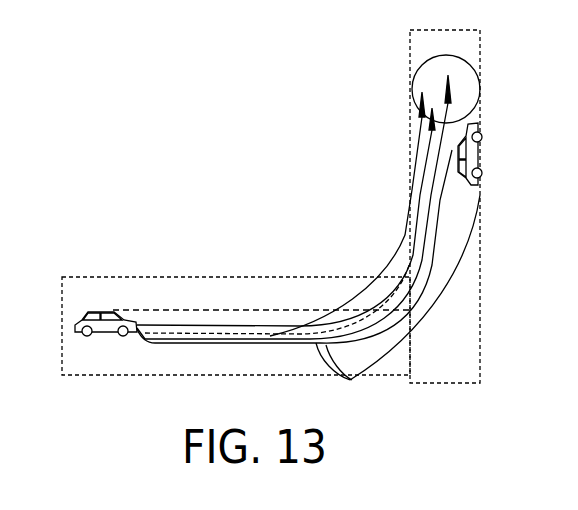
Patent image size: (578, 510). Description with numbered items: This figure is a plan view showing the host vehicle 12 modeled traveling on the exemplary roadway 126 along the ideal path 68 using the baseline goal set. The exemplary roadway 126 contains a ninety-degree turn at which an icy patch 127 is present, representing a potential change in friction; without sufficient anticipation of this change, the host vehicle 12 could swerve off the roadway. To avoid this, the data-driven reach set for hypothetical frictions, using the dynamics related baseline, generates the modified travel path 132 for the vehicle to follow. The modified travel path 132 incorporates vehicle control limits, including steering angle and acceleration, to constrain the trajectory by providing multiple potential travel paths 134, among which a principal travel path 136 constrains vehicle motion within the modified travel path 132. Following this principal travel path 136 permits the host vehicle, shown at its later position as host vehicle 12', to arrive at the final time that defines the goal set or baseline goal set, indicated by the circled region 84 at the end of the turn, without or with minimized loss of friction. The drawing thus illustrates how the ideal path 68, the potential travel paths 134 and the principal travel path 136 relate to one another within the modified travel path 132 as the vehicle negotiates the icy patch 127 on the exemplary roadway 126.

The host vehicle 12 is at (111, 291).
The host vehicle 12' is at (498, 154).
The ideal path 68 is at (437, 252).
The target region 84 is at (425, 82).
The exemplary roadway 126 is at (190, 365).
The icy patch 127 is at (482, 333).
The modified travel path 132 is at (278, 308).
The potential travel paths 134 is at (352, 382).
The principal travel path 136 is at (373, 285).